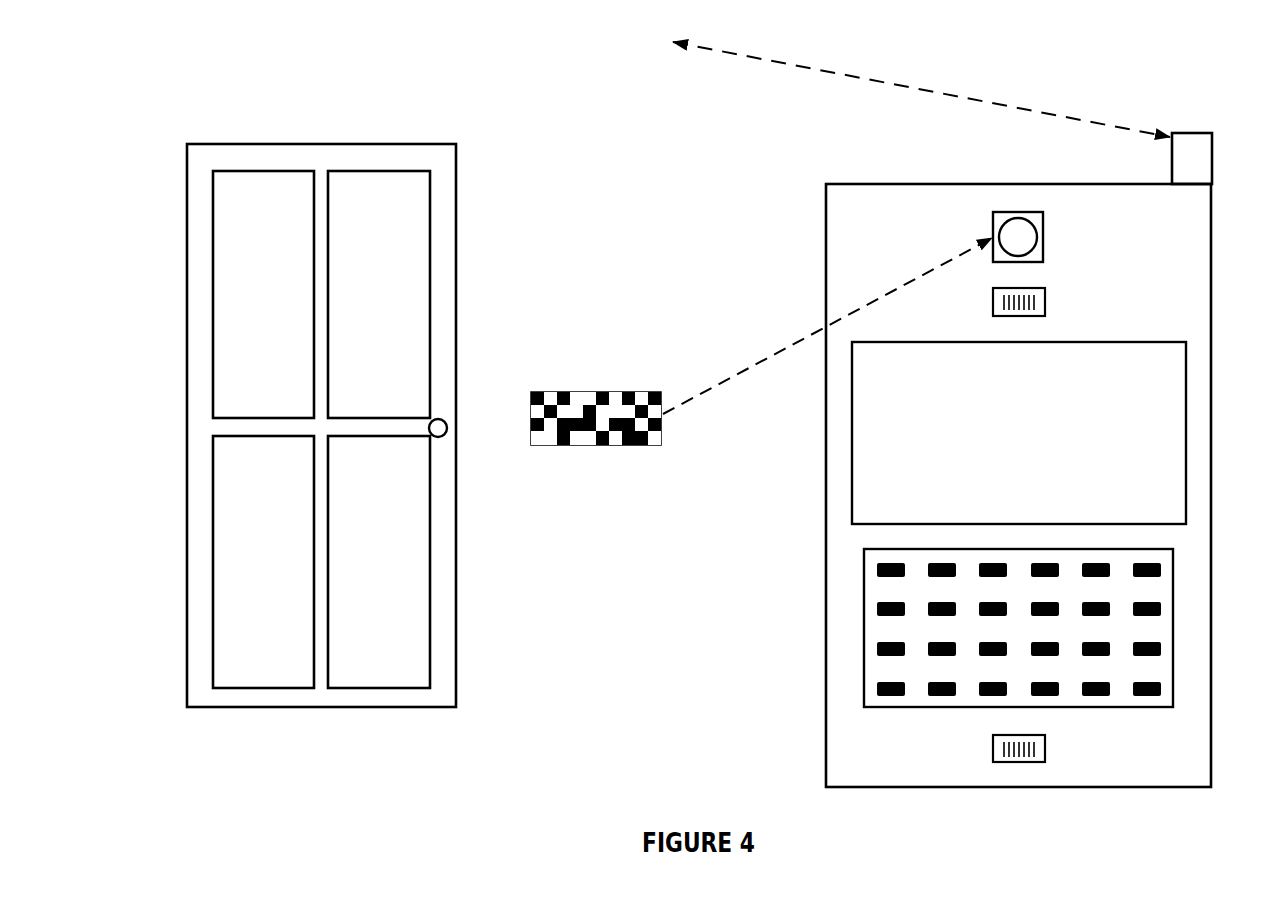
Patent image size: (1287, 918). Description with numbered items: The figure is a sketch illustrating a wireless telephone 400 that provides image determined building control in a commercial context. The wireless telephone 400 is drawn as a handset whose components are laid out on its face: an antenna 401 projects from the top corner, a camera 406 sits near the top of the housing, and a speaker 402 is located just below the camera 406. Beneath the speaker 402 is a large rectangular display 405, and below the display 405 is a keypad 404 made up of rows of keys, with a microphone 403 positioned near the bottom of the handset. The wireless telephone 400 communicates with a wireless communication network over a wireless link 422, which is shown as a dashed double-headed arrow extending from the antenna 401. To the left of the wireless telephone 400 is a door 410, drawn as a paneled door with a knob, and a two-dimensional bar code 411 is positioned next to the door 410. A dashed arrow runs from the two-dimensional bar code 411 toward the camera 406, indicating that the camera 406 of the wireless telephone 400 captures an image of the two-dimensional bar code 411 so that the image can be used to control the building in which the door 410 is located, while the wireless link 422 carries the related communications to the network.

The wireless telephone 400 is at (1194, 62).
The antenna 401 is at (1205, 133).
The speaker 402 is at (1047, 304).
The microphone 403 is at (1047, 750).
The keypad 404 is at (928, 712).
The display 405 is at (1168, 342).
The camera 406 is at (1045, 238).
The door 410 is at (187, 708).
The two-dimensional bar code 411 is at (531, 420).
The wireless link 422 is at (818, 70).